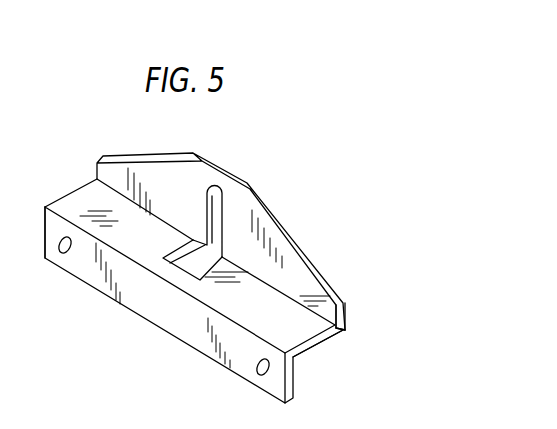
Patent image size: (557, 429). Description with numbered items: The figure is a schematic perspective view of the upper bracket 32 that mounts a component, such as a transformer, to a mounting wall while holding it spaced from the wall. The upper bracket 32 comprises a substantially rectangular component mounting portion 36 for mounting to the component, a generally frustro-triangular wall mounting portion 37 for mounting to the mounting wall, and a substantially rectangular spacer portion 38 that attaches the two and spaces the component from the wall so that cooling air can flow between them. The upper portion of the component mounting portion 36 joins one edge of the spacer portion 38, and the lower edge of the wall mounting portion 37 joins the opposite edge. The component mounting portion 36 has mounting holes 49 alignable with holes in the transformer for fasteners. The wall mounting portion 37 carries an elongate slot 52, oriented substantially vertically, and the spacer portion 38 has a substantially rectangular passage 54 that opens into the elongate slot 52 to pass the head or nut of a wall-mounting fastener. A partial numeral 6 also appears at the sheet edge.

The upper bracket 32 is at (213, 317).
The component mounting portion 36 is at (293, 372).
The wall mounting portion 37 is at (346, 312).
The spacer portion 38 is at (357, 345).
The mounting holes 49 is at (60, 252).
The elongate slot 52 is at (222, 210).
The passage 54 is at (172, 272).
The bracket (partial numeral) 6 is at (22, 270).